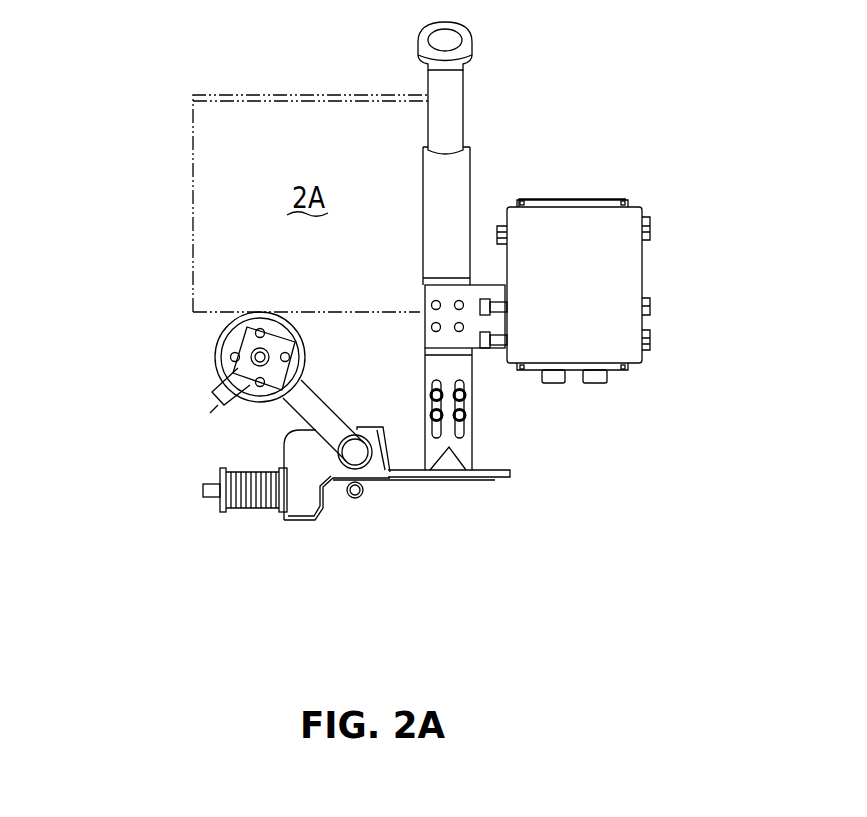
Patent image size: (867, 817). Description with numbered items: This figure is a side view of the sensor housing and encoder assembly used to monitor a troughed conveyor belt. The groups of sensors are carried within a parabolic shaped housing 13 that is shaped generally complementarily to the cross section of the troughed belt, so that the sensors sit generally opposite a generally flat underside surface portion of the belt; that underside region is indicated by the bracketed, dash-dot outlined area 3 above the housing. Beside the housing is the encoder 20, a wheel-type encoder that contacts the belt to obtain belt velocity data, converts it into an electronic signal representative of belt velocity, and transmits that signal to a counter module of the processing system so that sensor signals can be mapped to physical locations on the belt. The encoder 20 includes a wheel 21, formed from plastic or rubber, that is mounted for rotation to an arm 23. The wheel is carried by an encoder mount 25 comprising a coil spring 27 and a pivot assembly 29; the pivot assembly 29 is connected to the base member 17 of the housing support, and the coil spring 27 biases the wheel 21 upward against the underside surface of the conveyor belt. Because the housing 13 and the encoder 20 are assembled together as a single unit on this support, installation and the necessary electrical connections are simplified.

The position indicator housing region 3 is at (168, 95).
The housing 13 is at (465, 90).
The base member 17 is at (503, 480).
The encoder 20 is at (153, 393).
The wheel 21 is at (300, 331).
The arm 23 is at (300, 420).
The encoder mount 25 is at (360, 423).
The coil spring 27 is at (250, 512).
The pivot assembly 29 is at (367, 485).